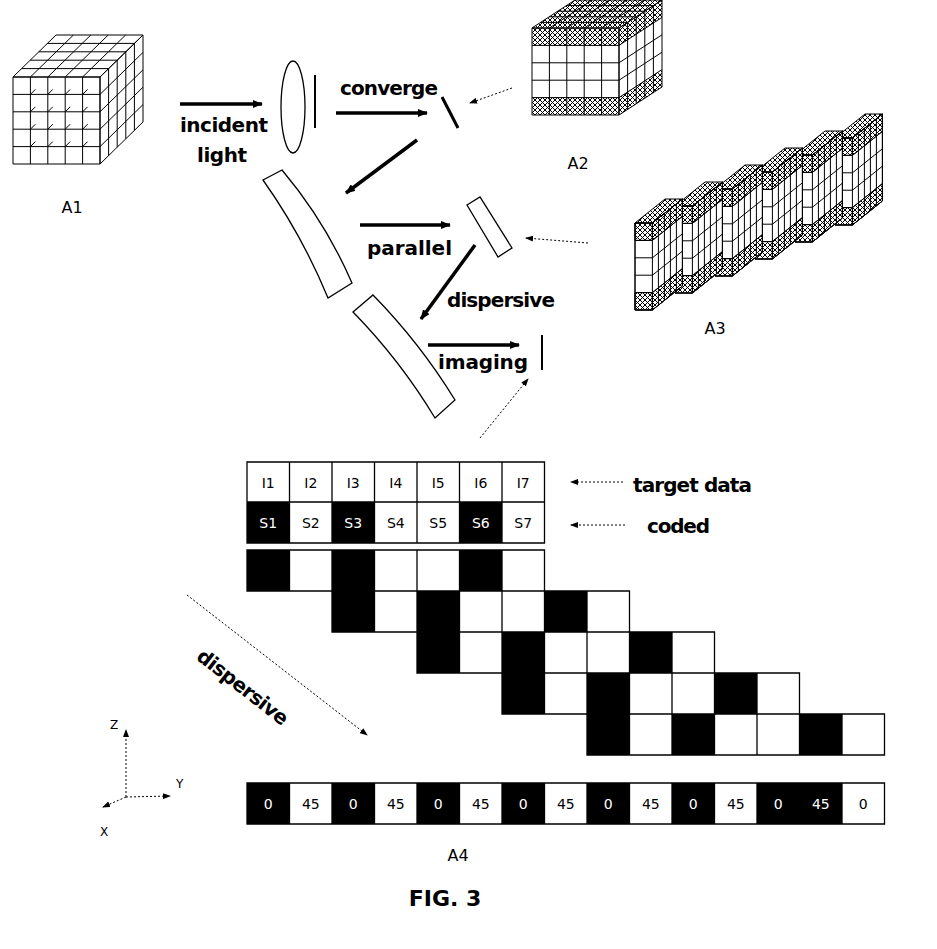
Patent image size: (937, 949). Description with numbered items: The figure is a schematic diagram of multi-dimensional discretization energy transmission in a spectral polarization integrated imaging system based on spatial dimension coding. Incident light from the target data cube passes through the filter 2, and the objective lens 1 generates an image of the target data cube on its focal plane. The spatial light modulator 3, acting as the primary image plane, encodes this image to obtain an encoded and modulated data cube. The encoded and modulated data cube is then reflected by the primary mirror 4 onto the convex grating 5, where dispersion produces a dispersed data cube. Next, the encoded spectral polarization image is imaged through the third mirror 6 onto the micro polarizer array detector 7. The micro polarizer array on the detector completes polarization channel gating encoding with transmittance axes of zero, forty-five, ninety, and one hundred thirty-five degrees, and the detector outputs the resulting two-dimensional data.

The objective lens 1 is at (293, 96).
The filter 2 is at (316, 90).
The spatial light modulator 3 is at (460, 116).
The primary mirror 4 is at (307, 234).
The convex grating 5 is at (490, 227).
The third mirror 6 is at (404, 356).
The micro polarizer array detector 7 is at (553, 352).